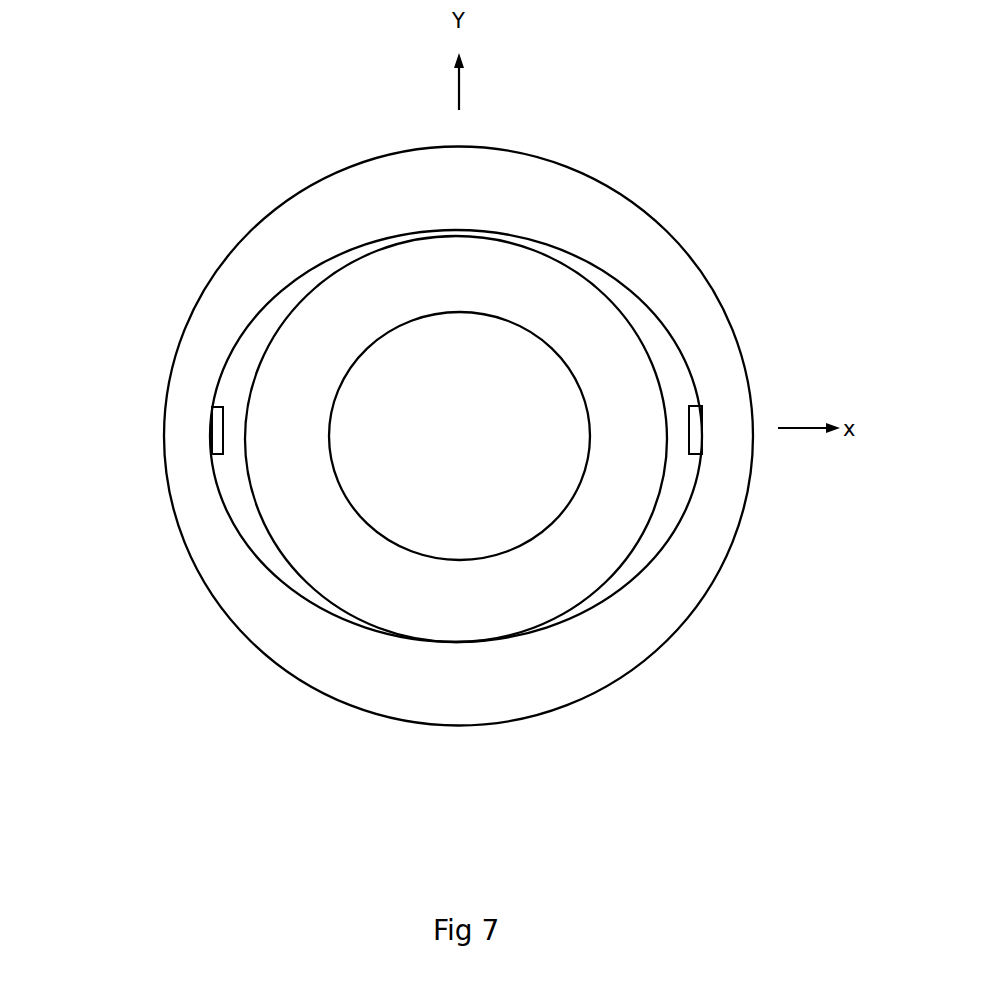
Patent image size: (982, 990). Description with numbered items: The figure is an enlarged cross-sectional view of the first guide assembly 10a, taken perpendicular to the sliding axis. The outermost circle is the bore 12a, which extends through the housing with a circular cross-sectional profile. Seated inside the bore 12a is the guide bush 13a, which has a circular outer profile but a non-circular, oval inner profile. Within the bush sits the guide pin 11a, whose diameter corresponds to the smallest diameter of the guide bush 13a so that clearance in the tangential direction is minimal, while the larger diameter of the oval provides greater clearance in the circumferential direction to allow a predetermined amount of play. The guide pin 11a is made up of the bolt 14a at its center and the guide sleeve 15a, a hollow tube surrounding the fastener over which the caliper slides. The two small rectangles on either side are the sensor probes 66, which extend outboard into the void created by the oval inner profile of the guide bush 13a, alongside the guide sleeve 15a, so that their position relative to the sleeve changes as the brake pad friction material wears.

The first guide assembly 10a is at (252, 760).
The guide pin 11a is at (636, 305).
The bore 12a is at (240, 624).
The guide bush 13a is at (650, 630).
The bolt 14a is at (483, 440).
The guide sleeve 15a is at (472, 282).
The sensor probes 66 is at (209, 421).